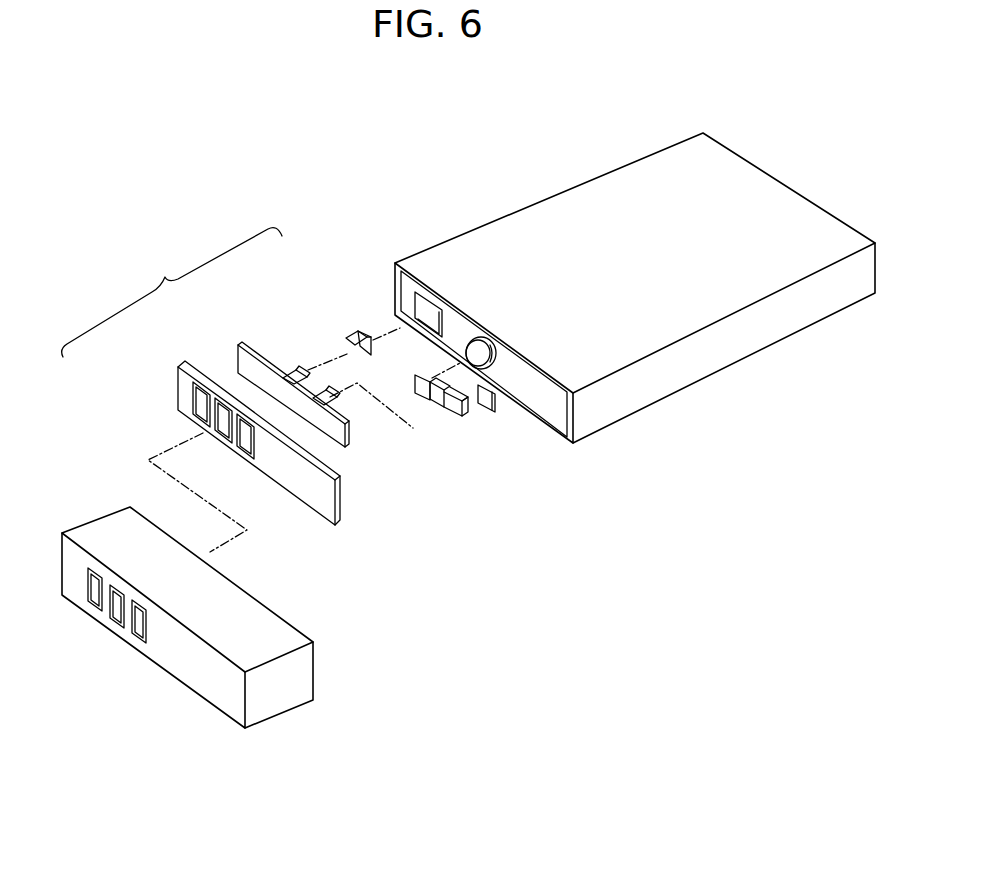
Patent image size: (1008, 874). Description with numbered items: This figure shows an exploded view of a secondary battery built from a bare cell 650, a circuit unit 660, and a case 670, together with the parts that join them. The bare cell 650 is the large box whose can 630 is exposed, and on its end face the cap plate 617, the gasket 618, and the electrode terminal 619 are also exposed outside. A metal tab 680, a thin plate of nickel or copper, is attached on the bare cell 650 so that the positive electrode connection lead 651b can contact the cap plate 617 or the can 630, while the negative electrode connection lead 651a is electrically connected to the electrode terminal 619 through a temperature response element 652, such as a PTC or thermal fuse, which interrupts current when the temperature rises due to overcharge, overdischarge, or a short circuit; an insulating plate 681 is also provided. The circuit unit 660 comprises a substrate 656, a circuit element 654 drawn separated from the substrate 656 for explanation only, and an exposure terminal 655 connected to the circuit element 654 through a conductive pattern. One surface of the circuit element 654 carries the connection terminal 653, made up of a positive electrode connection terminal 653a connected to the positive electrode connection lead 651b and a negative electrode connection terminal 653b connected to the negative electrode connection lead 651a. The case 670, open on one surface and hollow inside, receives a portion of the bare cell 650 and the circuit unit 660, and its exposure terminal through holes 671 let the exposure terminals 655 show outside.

The bare cell 650 is at (802, 131).
The can 630 is at (823, 222).
The cap plate 617 is at (542, 390).
The gasket 618 is at (487, 339).
The electrode terminal 619 is at (468, 360).
The metal tab 680 is at (423, 307).
The negative electrode connection lead 651a is at (452, 410).
The positive electrode connection lead 651b is at (354, 334).
The temperature response element 652 is at (440, 407).
The insulating plate 681 is at (484, 408).
The circuit unit 660 is at (172, 292).
The connection terminal 653 is at (255, 285).
The positive electrode connection terminal 653a is at (287, 371).
The negative electrode connection terminal 653b is at (318, 391).
The circuit element 654 is at (237, 358).
The exposure terminal 655 is at (196, 402).
The substrate 656 is at (178, 378).
The case 670 is at (187, 670).
The exposure terminal through holes 671 is at (132, 630).